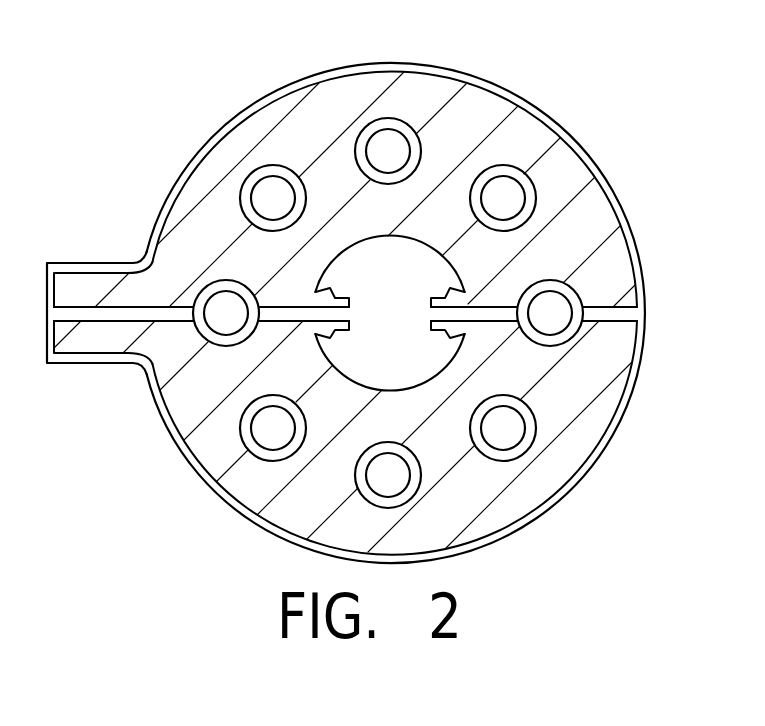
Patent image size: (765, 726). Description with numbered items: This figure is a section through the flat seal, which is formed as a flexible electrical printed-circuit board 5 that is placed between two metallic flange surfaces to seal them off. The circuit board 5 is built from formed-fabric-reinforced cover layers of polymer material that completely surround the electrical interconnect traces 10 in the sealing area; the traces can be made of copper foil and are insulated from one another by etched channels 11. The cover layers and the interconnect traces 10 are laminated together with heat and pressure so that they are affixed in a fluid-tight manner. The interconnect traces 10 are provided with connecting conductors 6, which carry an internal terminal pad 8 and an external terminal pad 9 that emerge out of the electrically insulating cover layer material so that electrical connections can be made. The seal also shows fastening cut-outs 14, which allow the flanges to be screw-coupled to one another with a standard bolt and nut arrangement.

The flexible electrical printed-circuit board 5 is at (563, 74).
The connecting conductors 6 is at (322, 185).
The internal terminal pad 8 is at (336, 338).
The external terminal pad 9 is at (63, 290).
The electrical interconnect traces 10 is at (580, 217).
The etched channels 11 is at (620, 312).
The fastening cut-outs 14 is at (507, 430).